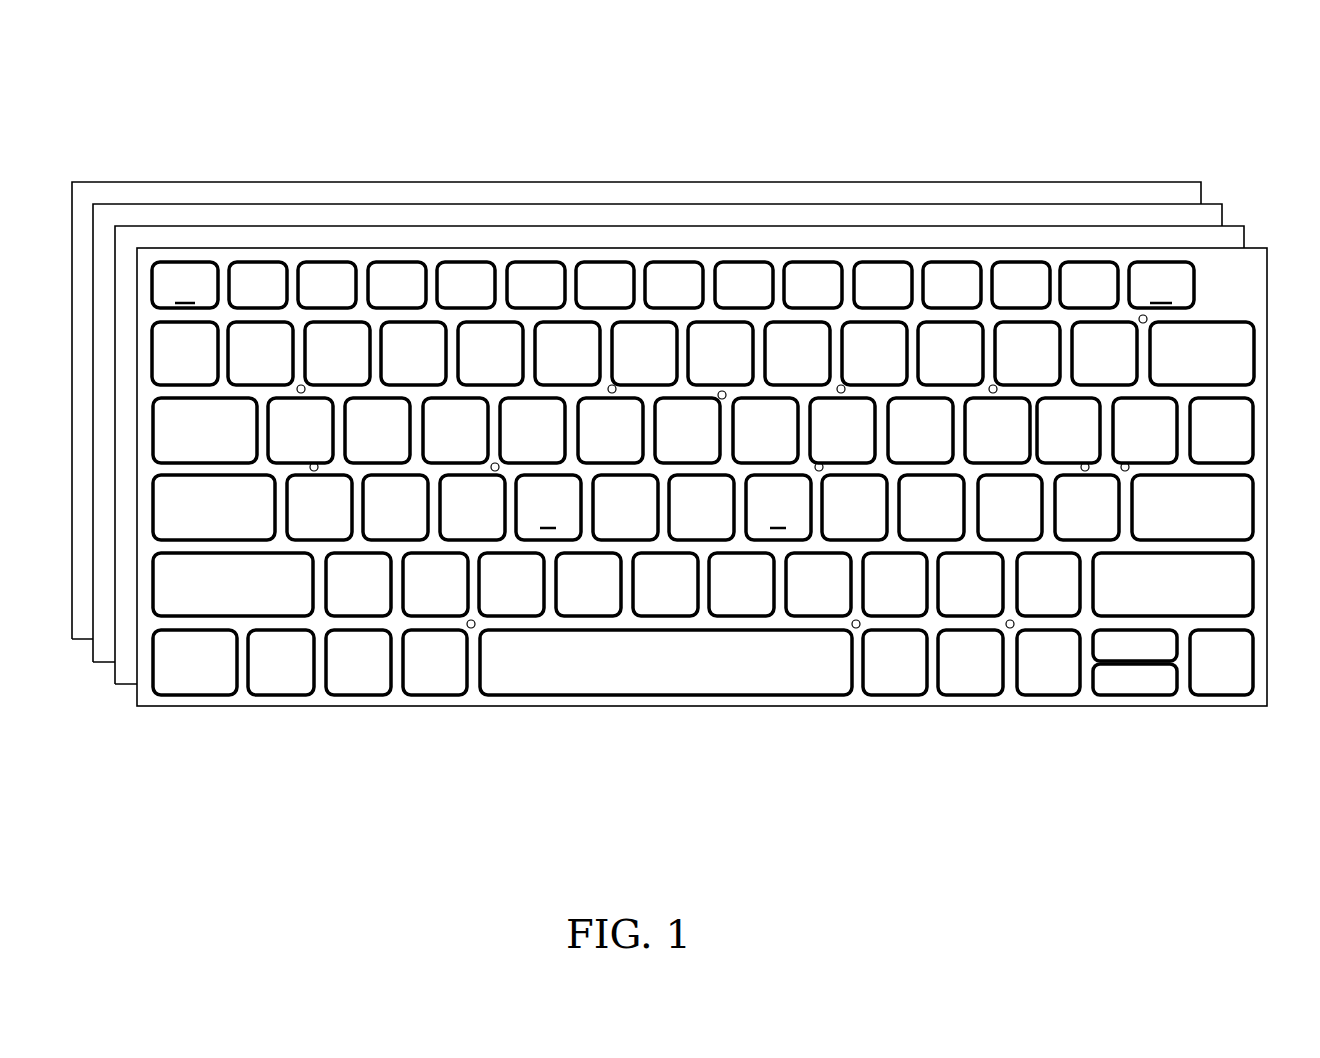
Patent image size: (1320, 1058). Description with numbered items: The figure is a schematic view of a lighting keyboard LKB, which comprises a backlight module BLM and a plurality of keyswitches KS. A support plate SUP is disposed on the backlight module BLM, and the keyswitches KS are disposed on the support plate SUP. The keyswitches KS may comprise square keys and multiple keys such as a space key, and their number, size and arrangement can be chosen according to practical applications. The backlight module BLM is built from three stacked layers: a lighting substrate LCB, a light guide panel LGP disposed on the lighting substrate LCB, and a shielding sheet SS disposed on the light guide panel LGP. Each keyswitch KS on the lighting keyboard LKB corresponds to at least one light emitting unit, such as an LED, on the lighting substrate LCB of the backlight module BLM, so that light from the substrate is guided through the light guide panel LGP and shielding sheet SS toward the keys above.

The lighting keyboard LKB is at (468, 80).
The backlight module BLM is at (658, 525).
The lighting substrate LCB is at (79, 652).
The light guide panel LGP is at (101, 676).
The shielding sheet SS is at (123, 698).
The support plate SUP is at (1135, 716).
The keyswitches KS is at (1130, 608).